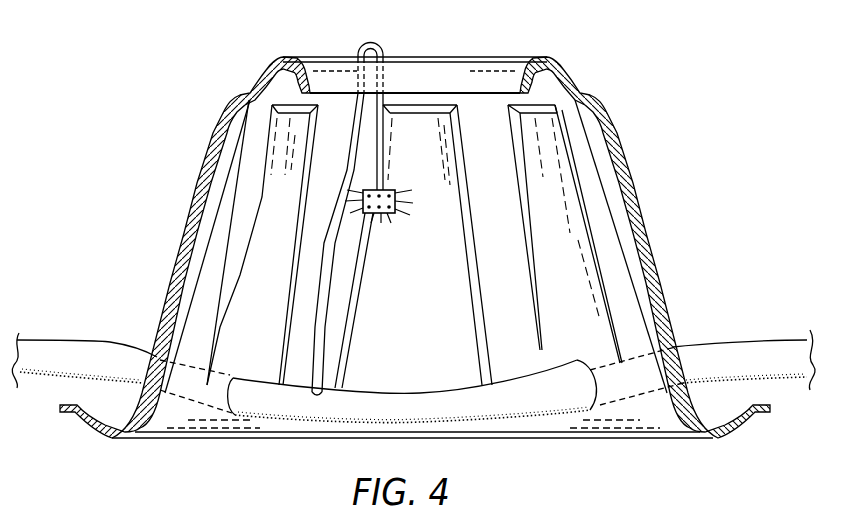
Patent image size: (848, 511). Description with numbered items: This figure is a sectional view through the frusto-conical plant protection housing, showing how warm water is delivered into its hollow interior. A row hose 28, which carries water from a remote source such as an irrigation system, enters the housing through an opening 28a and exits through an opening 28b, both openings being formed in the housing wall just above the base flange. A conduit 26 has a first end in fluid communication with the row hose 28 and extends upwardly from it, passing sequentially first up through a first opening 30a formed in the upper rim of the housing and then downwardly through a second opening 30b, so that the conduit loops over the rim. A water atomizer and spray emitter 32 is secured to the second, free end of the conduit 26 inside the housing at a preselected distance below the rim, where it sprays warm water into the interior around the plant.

The conduit 26 is at (374, 200).
The first opening 30a is at (359, 56).
The second opening 30b is at (384, 56).
The water atomizer and spray emitter 32 is at (390, 214).
The row hose 28 is at (723, 342).
The opening 28a is at (573, 376).
The opening 28b is at (242, 394).